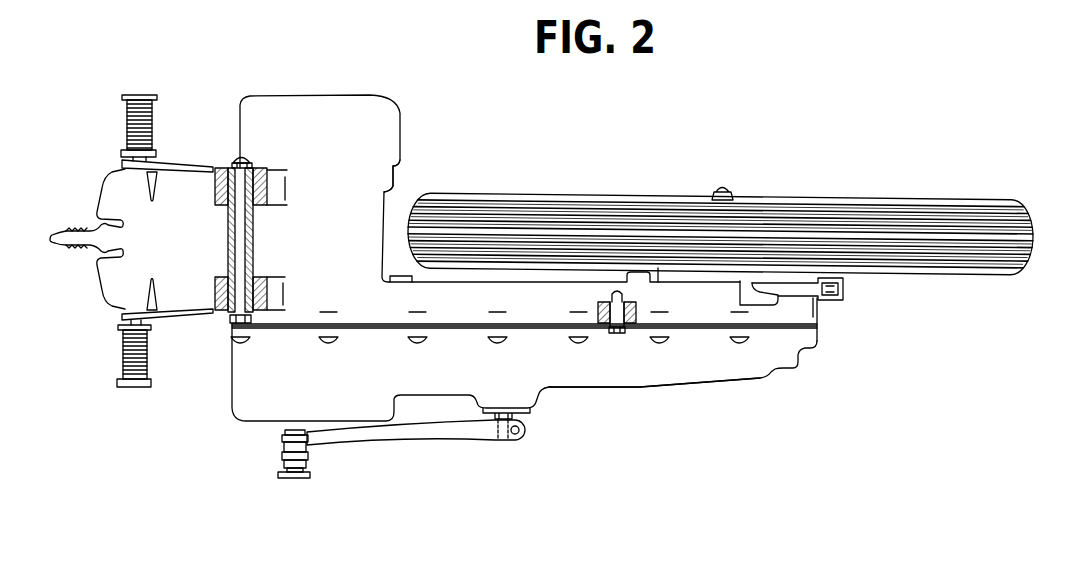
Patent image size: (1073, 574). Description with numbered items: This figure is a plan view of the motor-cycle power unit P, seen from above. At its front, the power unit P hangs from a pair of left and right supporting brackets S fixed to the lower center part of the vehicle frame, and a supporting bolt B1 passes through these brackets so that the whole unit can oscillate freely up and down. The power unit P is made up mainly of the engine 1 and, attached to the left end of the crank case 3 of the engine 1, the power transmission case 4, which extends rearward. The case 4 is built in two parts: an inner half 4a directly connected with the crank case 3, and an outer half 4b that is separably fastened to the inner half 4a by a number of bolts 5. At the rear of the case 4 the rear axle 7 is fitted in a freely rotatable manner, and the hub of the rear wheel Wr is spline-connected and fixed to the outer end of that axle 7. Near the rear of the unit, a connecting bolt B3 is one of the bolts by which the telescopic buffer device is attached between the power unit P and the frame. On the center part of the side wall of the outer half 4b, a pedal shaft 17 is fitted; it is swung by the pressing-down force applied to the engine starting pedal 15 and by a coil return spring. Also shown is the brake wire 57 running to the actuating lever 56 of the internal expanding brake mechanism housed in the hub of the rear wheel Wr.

The motor-cycle engine 1 is at (181, 173).
The supporting bracket S is at (223, 167).
The supporting bolt B1 is at (250, 238).
The power unit P is at (402, 120).
The crank case 3 is at (399, 165).
The rear wheel Wr is at (621, 192).
The rear axle 7 is at (722, 184).
The actuating lever 56 is at (836, 298).
The brake wire 57 is at (838, 287).
The power transmission case 4 is at (567, 368).
The inner half of the case 4a is at (711, 320).
The outer half of the case 4b is at (696, 388).
The bolts 5 is at (328, 345).
The connecting bolt B3 is at (618, 334).
The engine starting pedal 15 is at (282, 453).
The pedal shaft 17 is at (505, 442).